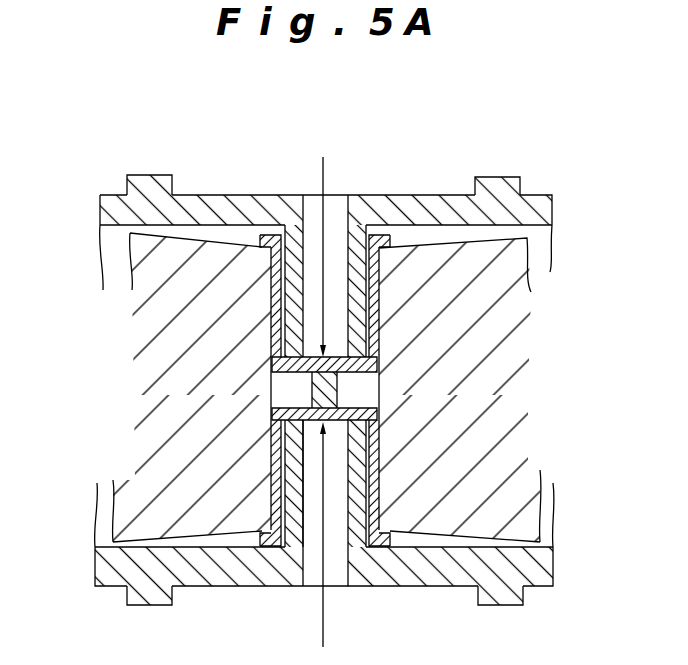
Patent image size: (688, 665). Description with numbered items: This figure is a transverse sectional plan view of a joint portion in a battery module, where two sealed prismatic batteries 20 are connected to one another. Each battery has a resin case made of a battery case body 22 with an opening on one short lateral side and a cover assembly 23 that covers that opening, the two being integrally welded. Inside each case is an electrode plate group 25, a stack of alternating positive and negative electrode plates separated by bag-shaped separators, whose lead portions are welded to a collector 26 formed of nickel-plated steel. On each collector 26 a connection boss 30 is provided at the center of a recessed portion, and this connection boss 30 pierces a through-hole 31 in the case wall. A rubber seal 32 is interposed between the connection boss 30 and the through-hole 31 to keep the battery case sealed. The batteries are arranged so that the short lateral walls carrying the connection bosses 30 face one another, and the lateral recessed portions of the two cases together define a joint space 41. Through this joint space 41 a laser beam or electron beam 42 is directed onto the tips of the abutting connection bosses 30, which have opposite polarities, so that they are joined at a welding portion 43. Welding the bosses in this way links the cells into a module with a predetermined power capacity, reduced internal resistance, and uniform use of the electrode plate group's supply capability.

The sealed prismatic battery 20 is at (202, 196).
The battery case body 22 is at (112, 195).
The cover assembly 23 is at (357, 196).
The electrode plate group 25 is at (136, 420).
The collector 26 is at (272, 287).
The connection boss 30 is at (305, 388).
The through-hole 31 is at (272, 481).
The rubber seal 32 is at (276, 425).
The joint space 41 is at (312, 213).
The laser beam or electron beam 42 is at (323, 172).
The welding portion 43 is at (328, 352).